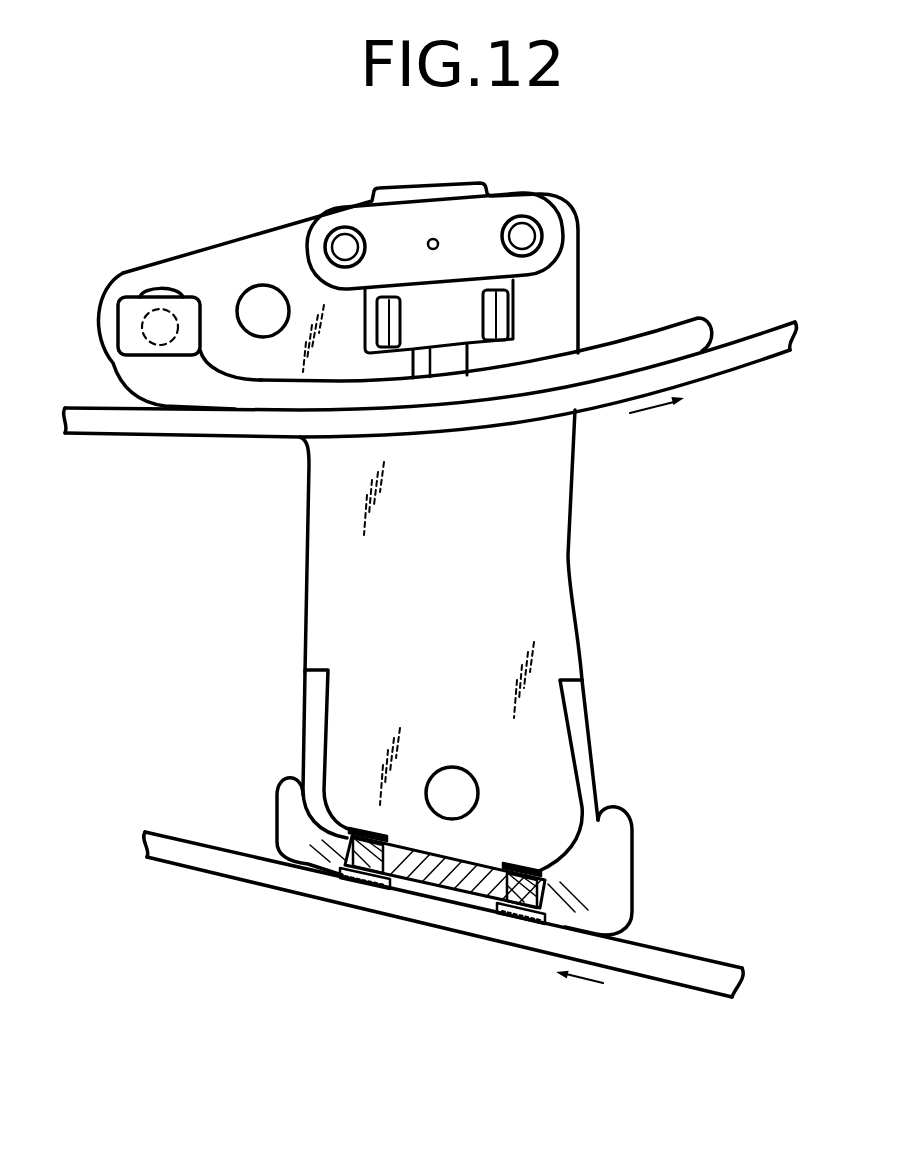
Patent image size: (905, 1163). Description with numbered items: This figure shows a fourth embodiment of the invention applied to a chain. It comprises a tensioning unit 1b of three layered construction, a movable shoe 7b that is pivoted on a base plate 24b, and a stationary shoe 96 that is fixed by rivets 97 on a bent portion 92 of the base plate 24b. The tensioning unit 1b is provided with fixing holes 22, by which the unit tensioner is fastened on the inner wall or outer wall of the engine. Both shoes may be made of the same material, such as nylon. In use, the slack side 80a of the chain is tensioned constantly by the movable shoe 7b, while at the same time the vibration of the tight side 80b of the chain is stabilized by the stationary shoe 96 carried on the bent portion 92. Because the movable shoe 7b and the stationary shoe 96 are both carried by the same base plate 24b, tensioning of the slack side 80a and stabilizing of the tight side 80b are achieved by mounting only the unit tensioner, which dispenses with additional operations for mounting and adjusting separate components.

The tensioning unit 1b is at (482, 193).
The movable shoe 7b is at (650, 340).
The fixing holes 22 is at (253, 291).
The base plate 24b is at (558, 520).
The slack side 80a is at (750, 355).
The tight side 80b is at (668, 960).
The bent portion 92 is at (587, 787).
The stationary shoe 96 is at (440, 885).
The rivets 97 is at (362, 878).